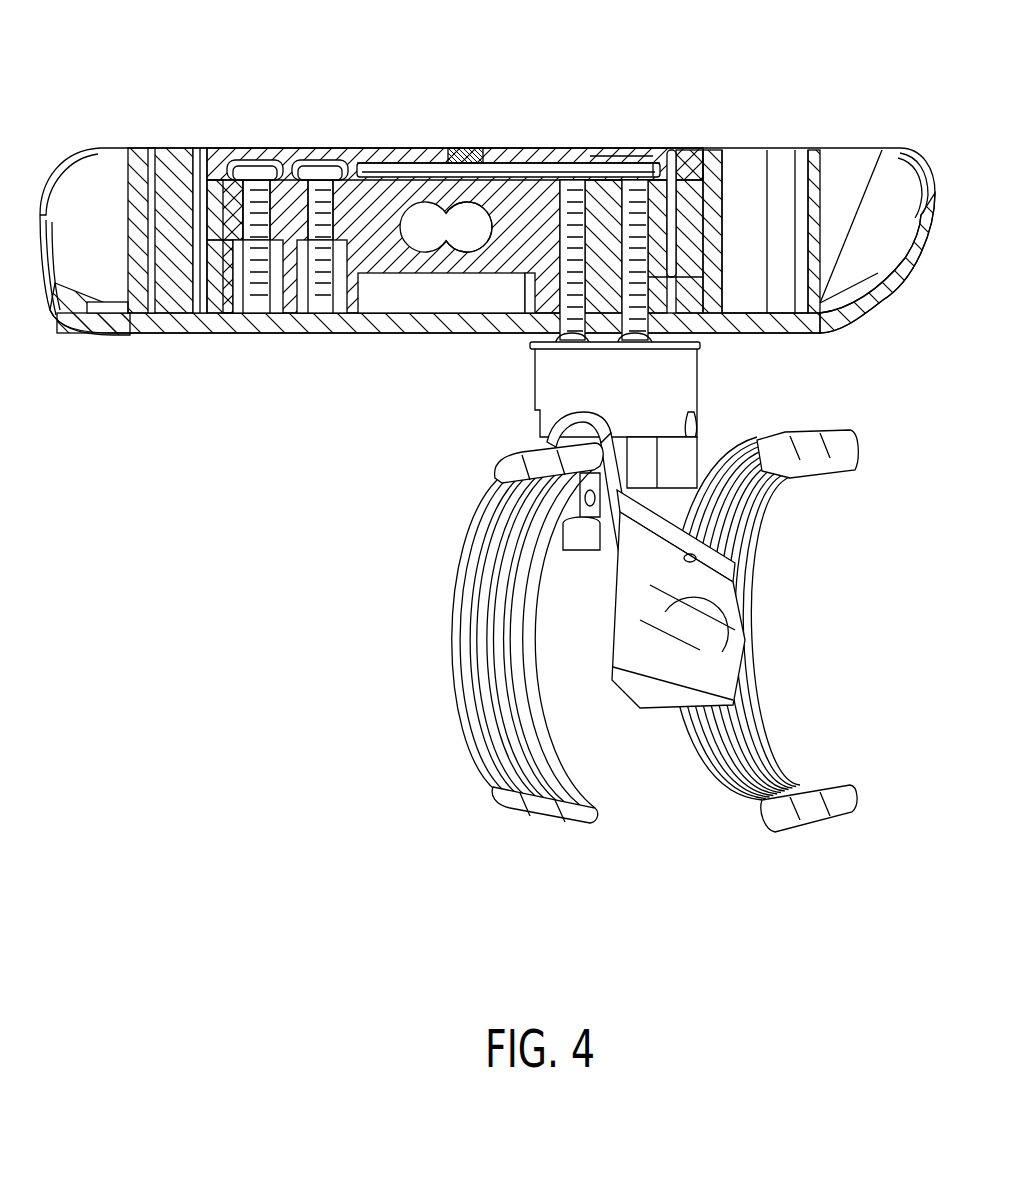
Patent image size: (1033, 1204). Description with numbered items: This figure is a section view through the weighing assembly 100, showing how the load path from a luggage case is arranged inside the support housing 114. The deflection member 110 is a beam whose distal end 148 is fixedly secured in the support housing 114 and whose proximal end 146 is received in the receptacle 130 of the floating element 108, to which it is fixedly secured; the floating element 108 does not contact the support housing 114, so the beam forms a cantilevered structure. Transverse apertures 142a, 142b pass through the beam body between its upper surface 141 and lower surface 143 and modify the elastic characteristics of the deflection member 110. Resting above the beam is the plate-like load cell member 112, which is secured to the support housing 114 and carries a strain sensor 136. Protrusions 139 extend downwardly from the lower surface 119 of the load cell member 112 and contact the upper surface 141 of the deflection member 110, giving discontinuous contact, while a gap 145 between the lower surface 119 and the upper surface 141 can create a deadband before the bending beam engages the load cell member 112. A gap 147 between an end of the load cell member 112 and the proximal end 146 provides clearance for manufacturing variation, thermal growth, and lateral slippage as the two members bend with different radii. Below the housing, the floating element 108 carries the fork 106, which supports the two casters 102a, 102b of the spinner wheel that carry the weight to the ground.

The weighing assembly 100 is at (160, 29).
The caster 102a is at (830, 836).
The caster 102b is at (541, 818).
The fork 106 is at (700, 440).
The floating element 108 is at (702, 148).
The deflection member 110 is at (518, 200).
The load cell member 112 is at (378, 148).
The support housing 114 is at (743, 148).
The lower surface 119 is at (547, 148).
The receptacle 130 is at (603, 128).
The strain sensor 136 is at (468, 148).
The protrusions 139 is at (190, 148).
The upper surface 141 is at (445, 148).
The transverse aperture 142a is at (418, 240).
The transverse aperture 142b is at (472, 242).
The lower surface 143 is at (447, 275).
The gap 145 is at (416, 172).
The proximal end 146 is at (636, 126).
The gap 147 is at (674, 172).
The distal end 148 is at (240, 110).